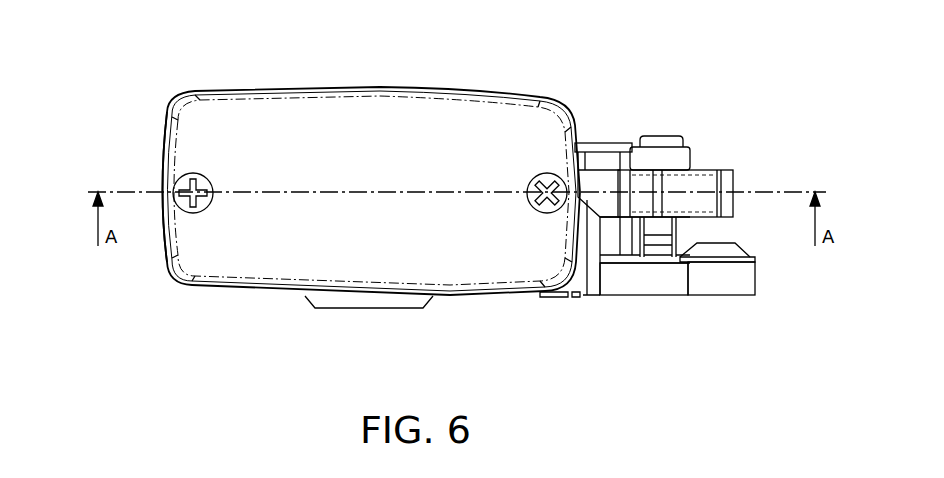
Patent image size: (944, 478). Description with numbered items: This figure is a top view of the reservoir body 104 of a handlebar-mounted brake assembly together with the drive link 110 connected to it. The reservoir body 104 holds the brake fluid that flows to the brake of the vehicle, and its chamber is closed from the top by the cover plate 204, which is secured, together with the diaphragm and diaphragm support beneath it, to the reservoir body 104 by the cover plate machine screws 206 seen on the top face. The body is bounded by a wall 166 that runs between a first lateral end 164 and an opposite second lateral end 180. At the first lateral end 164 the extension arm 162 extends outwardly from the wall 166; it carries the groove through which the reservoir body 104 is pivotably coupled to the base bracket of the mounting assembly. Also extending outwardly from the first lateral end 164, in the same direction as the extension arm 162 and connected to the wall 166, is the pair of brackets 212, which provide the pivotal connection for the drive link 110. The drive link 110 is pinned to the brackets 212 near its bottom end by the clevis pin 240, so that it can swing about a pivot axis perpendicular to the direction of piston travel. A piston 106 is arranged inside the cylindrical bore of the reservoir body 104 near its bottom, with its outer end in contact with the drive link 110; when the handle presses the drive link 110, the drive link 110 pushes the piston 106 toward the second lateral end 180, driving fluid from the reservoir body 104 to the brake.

The reservoir body 104 is at (435, 300).
The piston 106 is at (603, 150).
The drive link 110 is at (735, 182).
The extension arm 162 is at (722, 275).
The first lateral end 164 is at (590, 142).
The wall 166 is at (240, 285).
The second lateral end 180 is at (160, 207).
The cover plate 204 is at (515, 122).
The cover plate machine screw 206 is at (530, 180).
The pair of brackets 212 is at (596, 180).
The clevis pin 240 is at (660, 135).